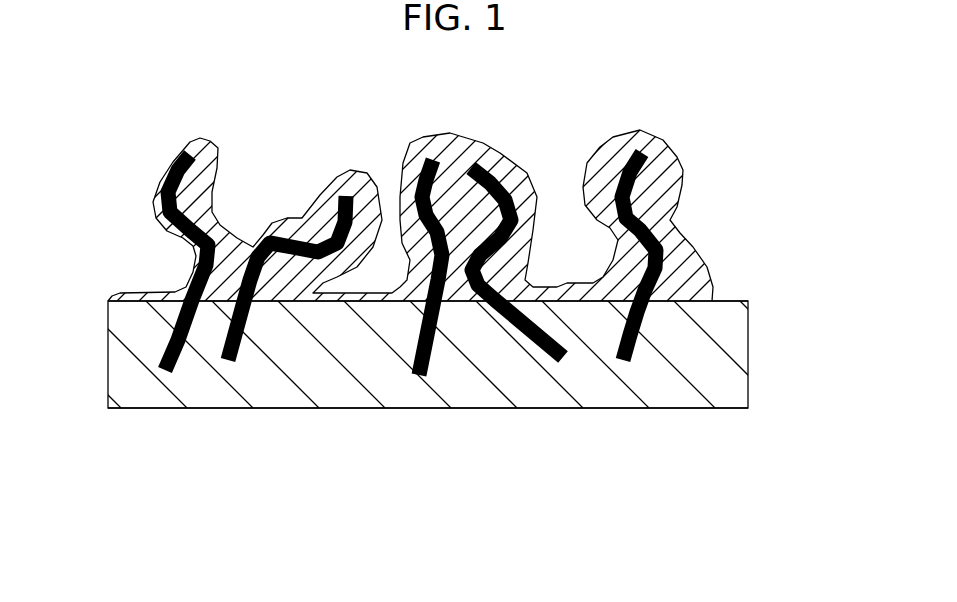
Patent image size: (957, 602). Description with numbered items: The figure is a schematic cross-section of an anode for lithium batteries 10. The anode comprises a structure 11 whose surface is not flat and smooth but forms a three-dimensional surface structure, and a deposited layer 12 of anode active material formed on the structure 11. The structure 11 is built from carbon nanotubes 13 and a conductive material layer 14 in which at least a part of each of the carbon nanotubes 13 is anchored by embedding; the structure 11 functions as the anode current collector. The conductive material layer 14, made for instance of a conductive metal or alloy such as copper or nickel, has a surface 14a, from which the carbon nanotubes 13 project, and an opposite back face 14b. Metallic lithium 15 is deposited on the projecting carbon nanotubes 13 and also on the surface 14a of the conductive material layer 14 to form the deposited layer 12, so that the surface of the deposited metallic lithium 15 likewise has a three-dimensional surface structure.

The anode for lithium batteries 10 is at (437, 300).
The structure 11 is at (437, 268).
The deposited layer 12 is at (430, 215).
The carbon nanotubes 13 is at (340, 212).
The conductive material layer 14 is at (423, 357).
The surface 14a is at (712, 300).
The back face 14b is at (713, 408).
The metallic lithium 15 is at (663, 178).